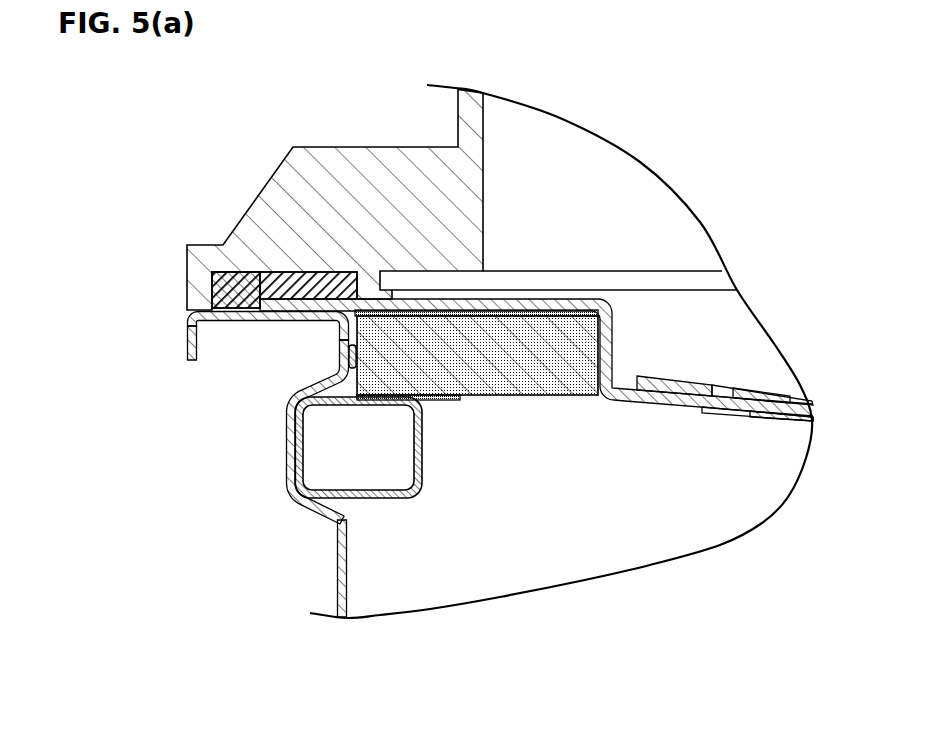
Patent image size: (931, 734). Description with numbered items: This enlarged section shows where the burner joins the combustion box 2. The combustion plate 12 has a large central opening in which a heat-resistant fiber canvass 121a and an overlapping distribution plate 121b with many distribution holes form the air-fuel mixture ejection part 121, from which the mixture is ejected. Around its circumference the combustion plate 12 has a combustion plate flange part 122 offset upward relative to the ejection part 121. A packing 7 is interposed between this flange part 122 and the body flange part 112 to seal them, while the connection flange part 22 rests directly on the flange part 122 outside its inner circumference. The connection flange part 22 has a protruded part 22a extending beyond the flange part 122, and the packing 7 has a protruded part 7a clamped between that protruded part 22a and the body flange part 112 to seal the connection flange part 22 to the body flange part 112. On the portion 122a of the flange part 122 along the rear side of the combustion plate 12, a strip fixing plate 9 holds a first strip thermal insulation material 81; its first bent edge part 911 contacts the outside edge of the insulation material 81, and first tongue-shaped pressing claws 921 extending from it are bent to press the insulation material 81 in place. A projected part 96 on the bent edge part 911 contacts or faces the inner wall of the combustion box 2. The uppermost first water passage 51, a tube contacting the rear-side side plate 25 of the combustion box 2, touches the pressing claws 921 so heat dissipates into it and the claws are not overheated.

The body flange part 112 is at (251, 248).
The packing 7 is at (285, 280).
The protruded part of packing 7a is at (223, 280).
The combustion plate flange part 122 is at (515, 298).
The front and rear side portion of combustion plate flange part 122a is at (487, 317).
The fixing plate 9 is at (530, 317).
The first strip thermal insulation material 81 is at (567, 393).
The first tongue-shaped pressing claws 921 is at (447, 401).
The projected part for positioning 96 is at (349, 357).
The connection flange part 22 is at (287, 322).
The protruded part of connection flange part 22a is at (220, 322).
The first bent edge part 911 is at (340, 373).
The combustion box 2 is at (281, 478).
The rear-side side plate 25 is at (337, 578).
The first water passages 51 is at (423, 470).
The combustion plate 12 is at (625, 402).
The air-fuel mixture ejection part 121 is at (725, 443).
The canvass 121a is at (680, 412).
The distribution plate 121b is at (757, 442).